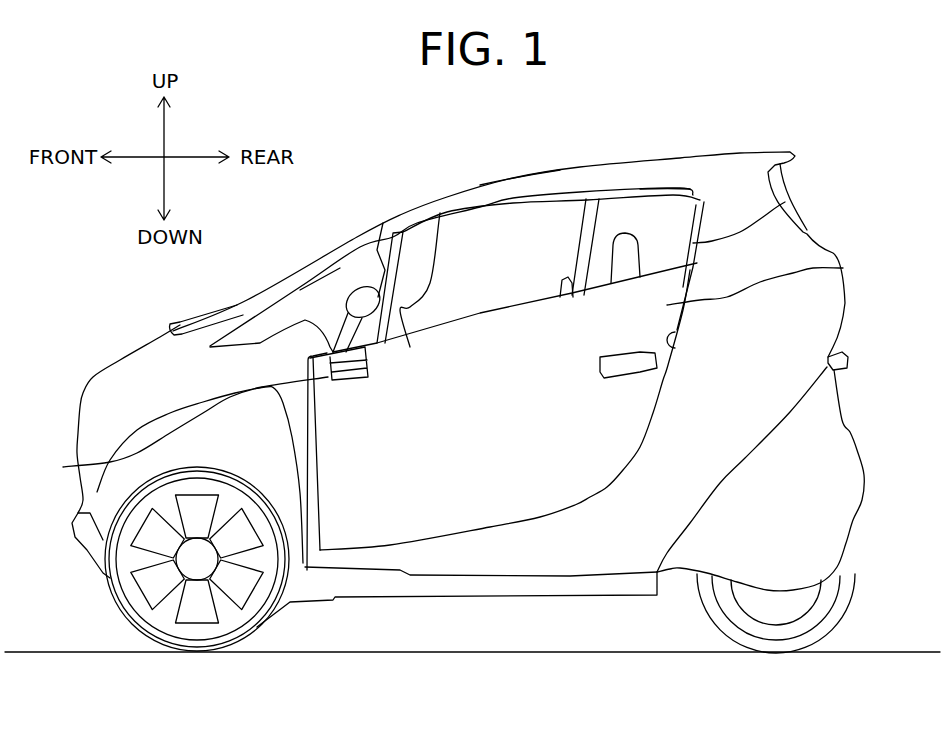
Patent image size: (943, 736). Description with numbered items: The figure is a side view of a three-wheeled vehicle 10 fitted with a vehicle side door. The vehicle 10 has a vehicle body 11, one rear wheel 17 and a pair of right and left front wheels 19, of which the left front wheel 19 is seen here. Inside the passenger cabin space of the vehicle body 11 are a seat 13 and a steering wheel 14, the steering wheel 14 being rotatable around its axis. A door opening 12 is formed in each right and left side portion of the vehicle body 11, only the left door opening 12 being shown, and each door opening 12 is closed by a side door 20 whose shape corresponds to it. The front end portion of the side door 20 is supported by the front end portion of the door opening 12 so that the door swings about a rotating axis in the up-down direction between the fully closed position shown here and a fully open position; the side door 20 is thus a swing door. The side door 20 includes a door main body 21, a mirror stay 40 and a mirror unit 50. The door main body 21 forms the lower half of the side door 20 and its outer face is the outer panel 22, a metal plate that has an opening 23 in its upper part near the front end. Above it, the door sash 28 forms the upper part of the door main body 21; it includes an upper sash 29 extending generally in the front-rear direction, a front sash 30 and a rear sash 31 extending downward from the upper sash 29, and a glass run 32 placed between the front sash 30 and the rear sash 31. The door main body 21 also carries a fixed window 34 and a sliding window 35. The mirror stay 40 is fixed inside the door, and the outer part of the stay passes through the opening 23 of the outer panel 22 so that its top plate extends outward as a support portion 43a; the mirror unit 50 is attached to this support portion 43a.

The vehicle 10 is at (272, 242).
The vehicle body 11 is at (830, 308).
The door opening 12 is at (677, 348).
The seat 13 is at (625, 233).
The steering wheel 14 is at (440, 213).
The rear wheel 17 is at (779, 647).
The front wheel 19 is at (203, 647).
The side door 20 is at (843, 268).
The door main body 21 is at (535, 350).
The outer panel 22 is at (498, 357).
The opening 23 is at (350, 383).
The door sash 28 is at (582, 198).
The upper sash 29 is at (505, 200).
The front sash 30 is at (383, 223).
The rear sash 31 is at (785, 202).
The glass run 32 is at (560, 297).
The fixed window 34 is at (673, 207).
The sliding window 35 is at (412, 243).
The mirror stay 40 is at (63, 467).
The support portion 43a is at (230, 310).
The mirror unit 50 is at (353, 300).